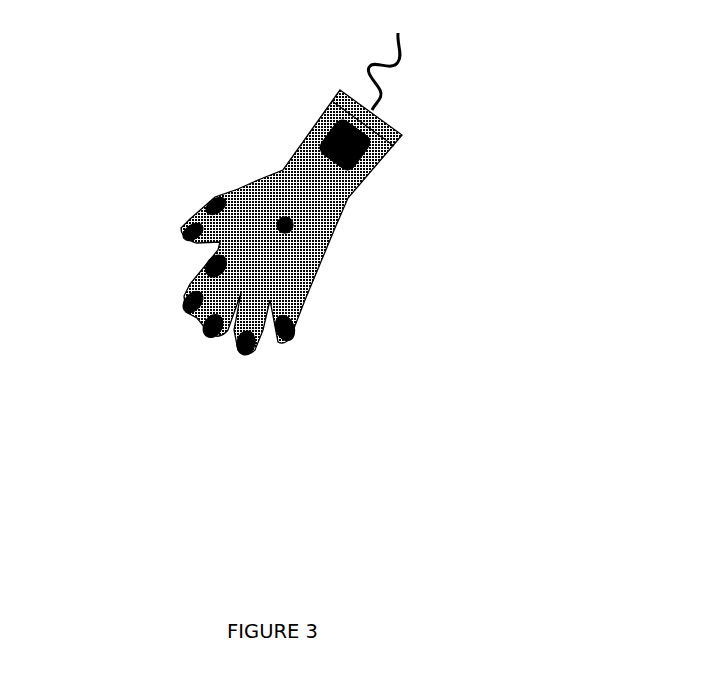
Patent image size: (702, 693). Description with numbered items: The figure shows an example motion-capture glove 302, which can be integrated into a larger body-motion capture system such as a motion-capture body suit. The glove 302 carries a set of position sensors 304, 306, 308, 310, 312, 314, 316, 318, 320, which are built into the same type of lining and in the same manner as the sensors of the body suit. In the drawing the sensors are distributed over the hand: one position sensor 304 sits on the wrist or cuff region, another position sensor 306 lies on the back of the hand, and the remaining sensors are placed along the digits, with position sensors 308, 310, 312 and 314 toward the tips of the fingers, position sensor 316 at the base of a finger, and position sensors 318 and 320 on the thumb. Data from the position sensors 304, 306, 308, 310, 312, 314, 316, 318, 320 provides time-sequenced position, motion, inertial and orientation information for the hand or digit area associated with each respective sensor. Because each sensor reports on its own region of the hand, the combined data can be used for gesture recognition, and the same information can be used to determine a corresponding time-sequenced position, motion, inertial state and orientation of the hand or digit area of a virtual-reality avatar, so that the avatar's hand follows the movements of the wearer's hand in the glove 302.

The motion-capture glove 302 is at (398, 415).
The position sensor 304 is at (383, 163).
The position sensor 306 is at (293, 234).
The position sensor 308 is at (298, 315).
The position sensor 310 is at (266, 315).
The position sensor 312 is at (231, 346).
The position sensor 314 is at (186, 292).
The position sensor 316 is at (213, 262).
The position sensor 318 is at (183, 227).
The position sensor 320 is at (212, 202).